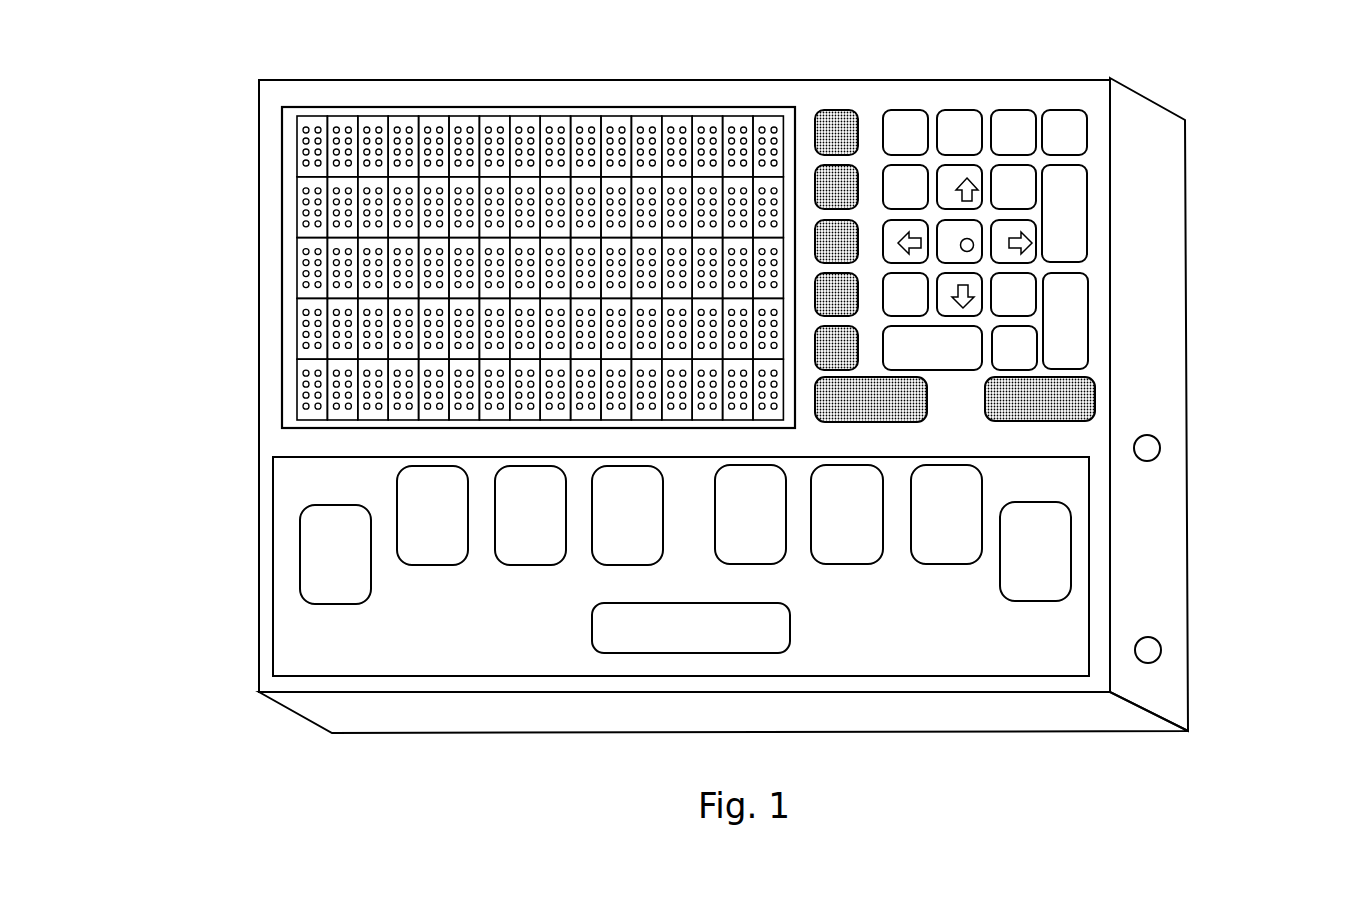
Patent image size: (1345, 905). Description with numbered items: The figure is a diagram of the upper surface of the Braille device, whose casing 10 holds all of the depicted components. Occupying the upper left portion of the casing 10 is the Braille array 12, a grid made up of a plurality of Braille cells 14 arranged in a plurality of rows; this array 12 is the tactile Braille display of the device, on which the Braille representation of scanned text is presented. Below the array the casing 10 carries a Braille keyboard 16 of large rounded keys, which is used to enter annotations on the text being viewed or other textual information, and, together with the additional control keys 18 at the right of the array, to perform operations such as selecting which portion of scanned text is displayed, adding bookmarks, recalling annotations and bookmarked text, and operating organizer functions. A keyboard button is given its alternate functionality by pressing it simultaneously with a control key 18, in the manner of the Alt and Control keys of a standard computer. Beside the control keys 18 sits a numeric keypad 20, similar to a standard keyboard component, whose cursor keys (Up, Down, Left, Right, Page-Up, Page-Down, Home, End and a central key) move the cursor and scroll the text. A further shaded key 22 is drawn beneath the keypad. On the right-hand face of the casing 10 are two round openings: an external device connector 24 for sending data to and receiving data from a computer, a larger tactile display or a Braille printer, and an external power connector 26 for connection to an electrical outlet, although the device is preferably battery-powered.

The casing 10 is at (347, 88).
The Braille array 12 is at (280, 127).
The Braille cell 14 is at (297, 200).
The Braille keyboard 16 is at (283, 463).
The control keys 18 is at (847, 100).
The numeric keypad 20 is at (1100, 220).
The scan key 22 is at (928, 403).
The external device connector 24 is at (1150, 449).
The external power connector 26 is at (1152, 655).